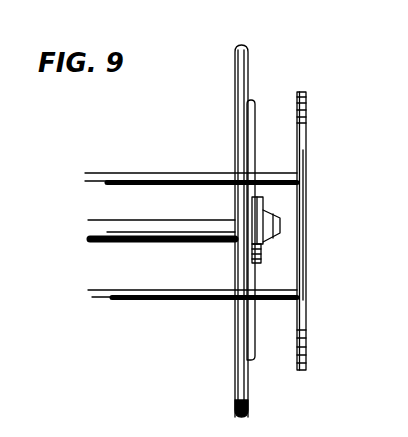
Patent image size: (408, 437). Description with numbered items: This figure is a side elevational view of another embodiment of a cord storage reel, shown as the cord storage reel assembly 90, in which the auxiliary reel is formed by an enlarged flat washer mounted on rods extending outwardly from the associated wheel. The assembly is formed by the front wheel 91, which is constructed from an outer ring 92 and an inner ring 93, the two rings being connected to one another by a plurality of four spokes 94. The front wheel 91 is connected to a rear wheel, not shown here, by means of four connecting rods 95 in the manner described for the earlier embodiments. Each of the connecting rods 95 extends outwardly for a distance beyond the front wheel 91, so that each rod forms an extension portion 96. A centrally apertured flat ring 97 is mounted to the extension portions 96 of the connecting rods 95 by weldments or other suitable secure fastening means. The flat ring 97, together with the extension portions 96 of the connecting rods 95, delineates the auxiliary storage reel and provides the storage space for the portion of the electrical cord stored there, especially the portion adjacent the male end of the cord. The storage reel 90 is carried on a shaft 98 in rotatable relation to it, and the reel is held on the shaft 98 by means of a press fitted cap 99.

The cord storage reel assembly 90 is at (272, 78).
The front wheel 91 is at (237, 47).
The outer ring 92 is at (238, 386).
The inner ring 93 is at (262, 252).
The spokes 94 is at (247, 128).
The connecting rods 95 is at (169, 173).
The extension portion 96 is at (281, 173).
The flat ring 97 is at (305, 207).
The shaft 98 is at (168, 239).
The press fitted cap 99 is at (280, 218).